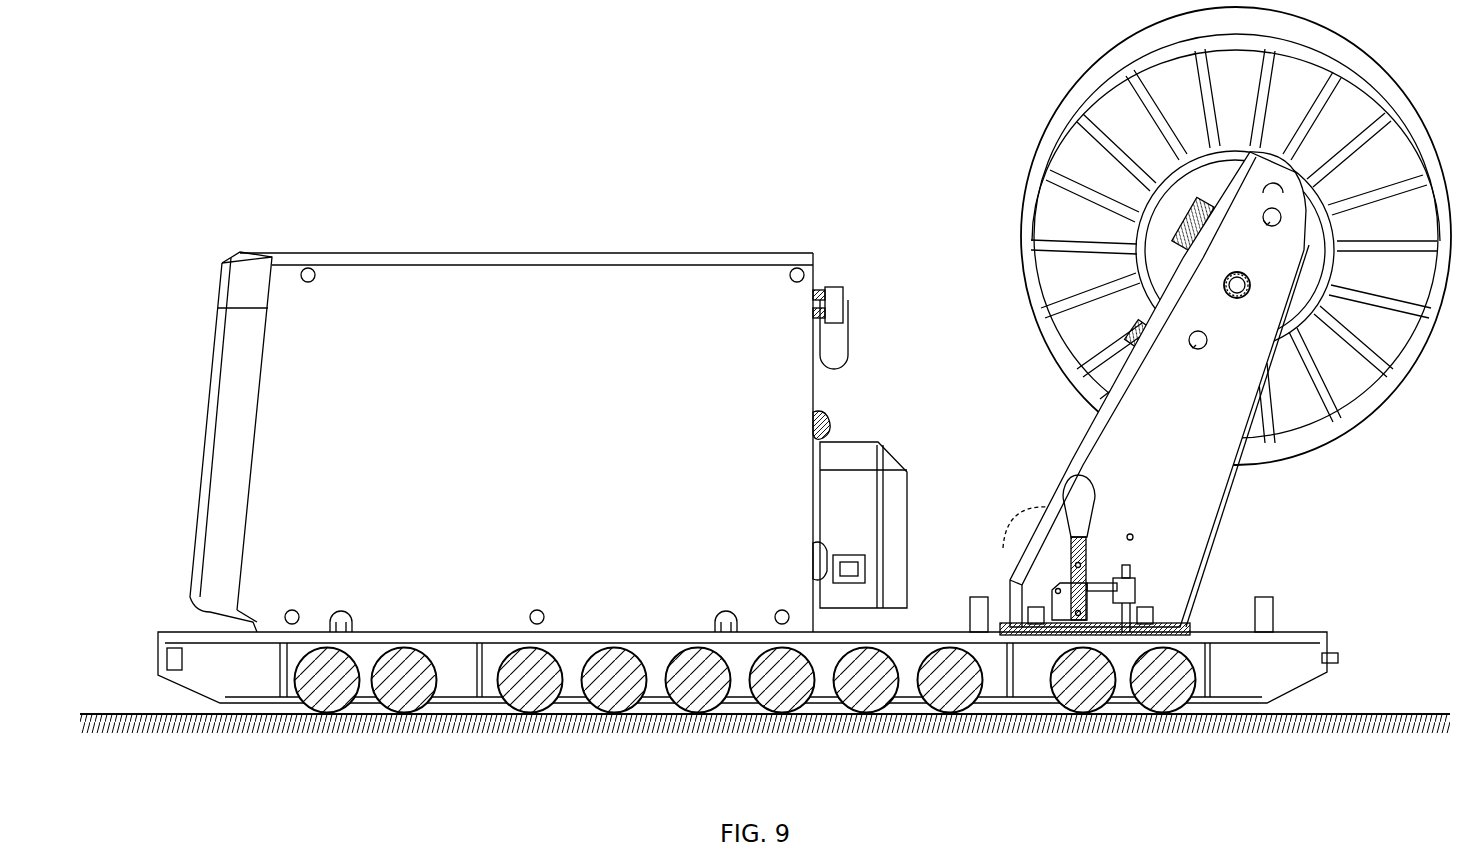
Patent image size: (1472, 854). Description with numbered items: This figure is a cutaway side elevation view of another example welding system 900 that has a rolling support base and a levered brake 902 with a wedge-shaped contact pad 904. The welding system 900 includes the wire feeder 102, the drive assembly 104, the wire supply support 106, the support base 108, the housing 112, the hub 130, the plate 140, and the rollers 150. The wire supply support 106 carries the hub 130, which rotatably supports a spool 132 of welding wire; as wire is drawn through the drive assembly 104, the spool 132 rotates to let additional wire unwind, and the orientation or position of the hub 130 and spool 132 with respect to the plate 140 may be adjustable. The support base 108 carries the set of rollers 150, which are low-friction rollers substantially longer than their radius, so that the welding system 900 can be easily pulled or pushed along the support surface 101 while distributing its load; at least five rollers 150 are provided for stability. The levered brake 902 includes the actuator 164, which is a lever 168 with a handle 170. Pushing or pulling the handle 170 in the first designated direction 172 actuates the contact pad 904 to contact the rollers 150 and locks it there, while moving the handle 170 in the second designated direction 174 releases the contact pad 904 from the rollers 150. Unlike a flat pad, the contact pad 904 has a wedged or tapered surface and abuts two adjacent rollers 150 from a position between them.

The welding system 900 is at (171, 65).
The support surface 101 is at (148, 713).
The wire feeder 102 is at (277, 171).
The drive assembly 104 is at (831, 240).
The wire supply support 106 is at (1220, 497).
The support base 108 is at (162, 603).
The housing 112 is at (410, 253).
The hub 130 is at (1237, 283).
The spool 132 is at (1082, 78).
The plate 140 is at (917, 630).
The rollers 150 is at (1162, 712).
The actuator 164 is at (1151, 490).
The lever 168 is at (1134, 554).
The handle 170 is at (1090, 487).
The first designated direction 172 is at (1041, 504).
The second designated direction 174 is at (991, 553).
The levered brake 902 is at (1030, 429).
The contact pad 904 is at (1128, 657).